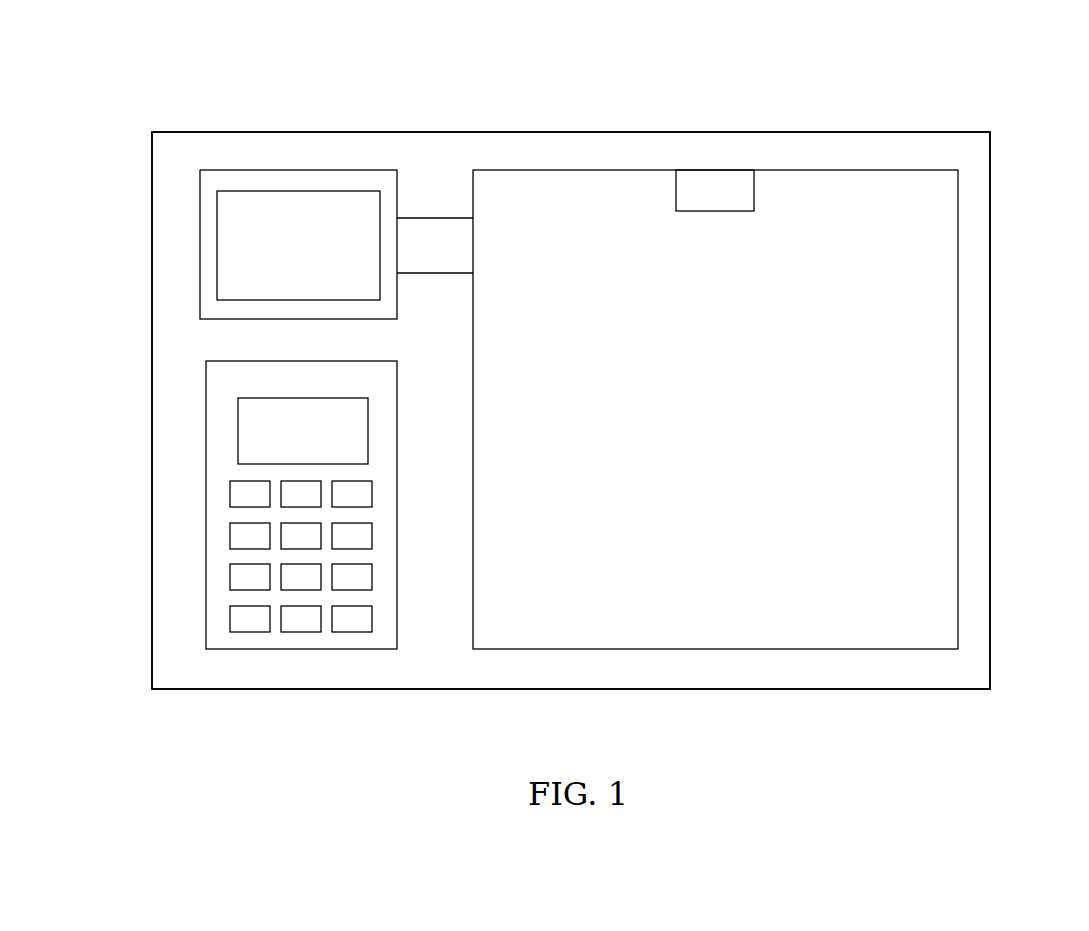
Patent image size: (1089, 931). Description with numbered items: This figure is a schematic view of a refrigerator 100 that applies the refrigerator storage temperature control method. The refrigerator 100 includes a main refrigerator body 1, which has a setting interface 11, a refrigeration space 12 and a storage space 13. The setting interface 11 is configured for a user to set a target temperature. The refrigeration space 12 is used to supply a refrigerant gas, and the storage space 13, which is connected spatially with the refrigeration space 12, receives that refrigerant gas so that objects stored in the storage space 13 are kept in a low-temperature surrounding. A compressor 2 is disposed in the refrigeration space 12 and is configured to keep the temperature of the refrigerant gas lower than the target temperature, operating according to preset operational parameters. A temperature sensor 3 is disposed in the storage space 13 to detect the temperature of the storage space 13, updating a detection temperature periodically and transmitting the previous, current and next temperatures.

The refrigerator 100 is at (1010, 147).
The main refrigerator body 1 is at (990, 650).
The setting interface 11 is at (214, 526).
The refrigeration space 12 is at (213, 253).
The storage space 13 is at (927, 452).
The compressor 2 is at (334, 242).
The temperature sensor 3 is at (716, 182).